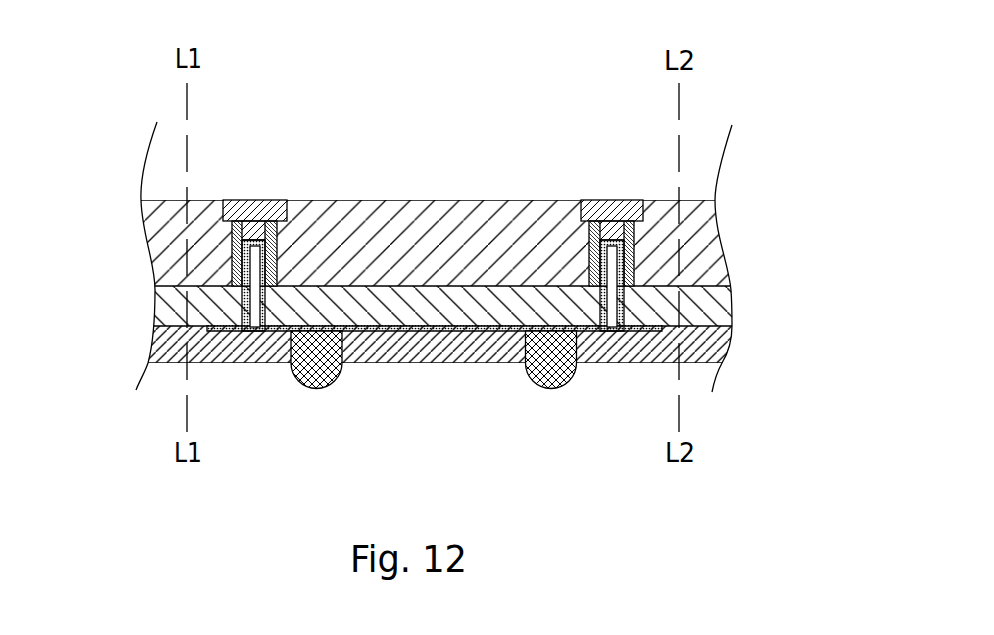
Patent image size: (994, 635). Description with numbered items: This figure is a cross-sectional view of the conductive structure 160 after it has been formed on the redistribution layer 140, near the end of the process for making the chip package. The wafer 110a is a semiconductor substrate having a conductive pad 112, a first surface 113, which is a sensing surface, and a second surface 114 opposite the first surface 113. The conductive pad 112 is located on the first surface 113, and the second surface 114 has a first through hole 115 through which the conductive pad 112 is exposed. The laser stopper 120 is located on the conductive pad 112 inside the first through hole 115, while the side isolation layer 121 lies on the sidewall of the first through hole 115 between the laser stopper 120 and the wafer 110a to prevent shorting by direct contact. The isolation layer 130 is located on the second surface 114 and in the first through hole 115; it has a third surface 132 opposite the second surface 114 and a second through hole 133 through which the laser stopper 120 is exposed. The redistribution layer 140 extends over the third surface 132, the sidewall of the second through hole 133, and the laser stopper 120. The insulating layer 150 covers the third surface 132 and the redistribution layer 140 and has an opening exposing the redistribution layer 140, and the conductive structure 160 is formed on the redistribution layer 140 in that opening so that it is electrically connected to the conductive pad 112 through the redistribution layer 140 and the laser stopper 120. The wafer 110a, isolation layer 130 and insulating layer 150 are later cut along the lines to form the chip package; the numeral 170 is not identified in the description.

The wafer 110a is at (513, 220).
The first surface 113 is at (395, 199).
The second surface 114 is at (470, 300).
The isolation layer 130 is at (427, 363).
The third surface 132 is at (387, 331).
The redistribution layer 140 is at (508, 331).
The second through hole 133 is at (640, 331).
The insulating layer 150 is at (338, 364).
The conductive structure 160 is at (550, 375).
The laser stopper 120 is at (675, 211).
The conductive pad 112 is at (608, 202).
The side isolation layer 121 is at (592, 254).
The first through hole 115 is at (638, 250).
The conductive liner 170 is at (618, 291).